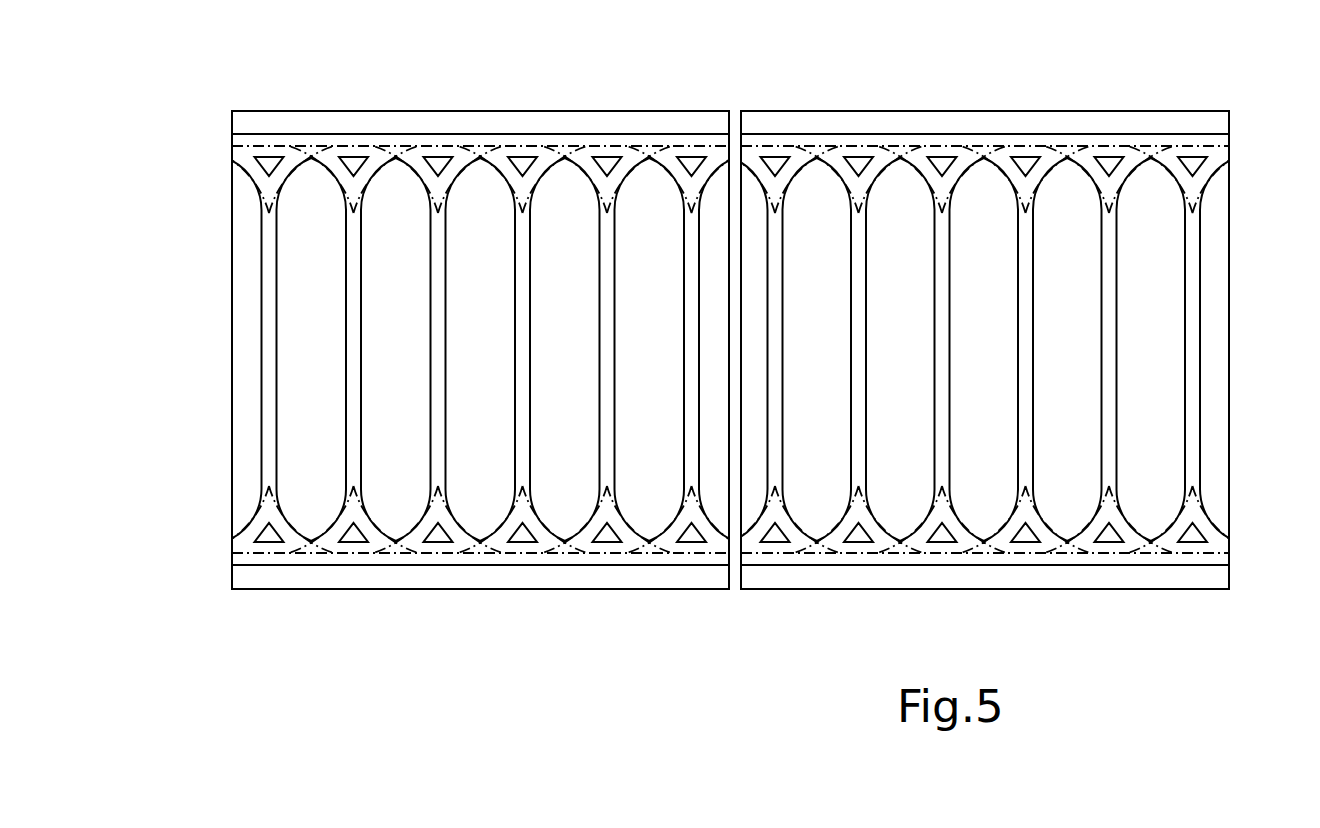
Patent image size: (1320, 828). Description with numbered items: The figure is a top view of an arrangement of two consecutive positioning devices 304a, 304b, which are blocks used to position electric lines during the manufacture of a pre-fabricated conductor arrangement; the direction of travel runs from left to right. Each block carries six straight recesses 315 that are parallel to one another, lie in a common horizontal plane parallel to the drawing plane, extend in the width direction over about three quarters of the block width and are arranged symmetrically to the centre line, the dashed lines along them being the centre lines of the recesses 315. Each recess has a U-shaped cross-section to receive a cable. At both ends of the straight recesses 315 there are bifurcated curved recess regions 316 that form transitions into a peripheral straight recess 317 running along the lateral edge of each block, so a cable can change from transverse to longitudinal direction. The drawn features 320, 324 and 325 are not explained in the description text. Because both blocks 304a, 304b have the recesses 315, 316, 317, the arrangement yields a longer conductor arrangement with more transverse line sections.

The positioning device 304a is at (447, 111).
The positioning device 304b is at (903, 112).
The recess 315 is at (683, 463).
The bifurcated curved recess region 316 is at (968, 540).
The peripheral straight recess 317 is at (1038, 557).
The gap between sections 320 is at (733, 333).
The section edge 324 is at (742, 560).
The section side edge 325 is at (1231, 228).